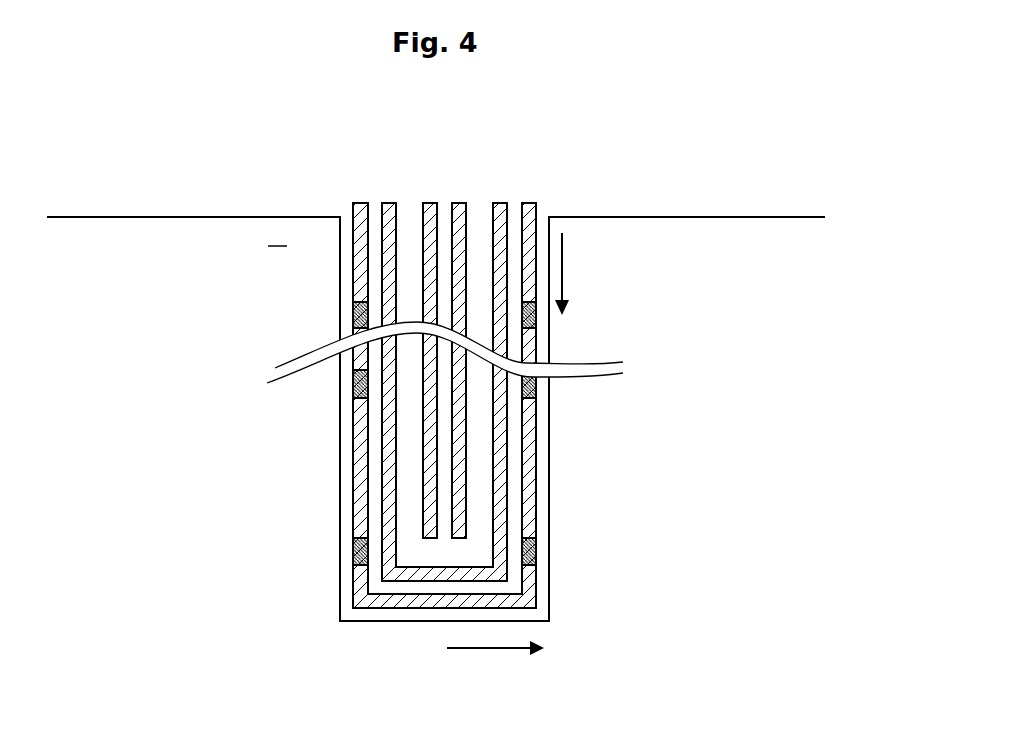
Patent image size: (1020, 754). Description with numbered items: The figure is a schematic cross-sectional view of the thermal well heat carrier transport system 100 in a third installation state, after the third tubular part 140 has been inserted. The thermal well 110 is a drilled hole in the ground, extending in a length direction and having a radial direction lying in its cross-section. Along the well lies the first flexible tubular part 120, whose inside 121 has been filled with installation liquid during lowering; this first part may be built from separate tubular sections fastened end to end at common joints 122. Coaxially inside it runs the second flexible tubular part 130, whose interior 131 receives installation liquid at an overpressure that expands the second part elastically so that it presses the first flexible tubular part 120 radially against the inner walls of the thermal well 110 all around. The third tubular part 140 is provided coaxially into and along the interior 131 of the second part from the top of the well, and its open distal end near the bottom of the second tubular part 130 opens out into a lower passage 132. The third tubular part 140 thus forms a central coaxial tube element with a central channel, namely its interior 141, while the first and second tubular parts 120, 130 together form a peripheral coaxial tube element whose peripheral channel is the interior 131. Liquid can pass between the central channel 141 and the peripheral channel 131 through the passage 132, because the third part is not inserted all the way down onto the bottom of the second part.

The heat carrier transport system 100 is at (337, 145).
The thermal well 110 is at (338, 285).
The first flexible tubular part 120 is at (352, 415).
The inside of the first tubular part 121 is at (478, 512).
The common joints 122 is at (355, 388).
The second flexible tubular part 130 is at (382, 413).
The interior of the second tubular part 131 is at (408, 408).
The lower passage 132 is at (447, 553).
The third tubular part 140 is at (448, 455).
The interior of the third tubular part 141 is at (445, 500).